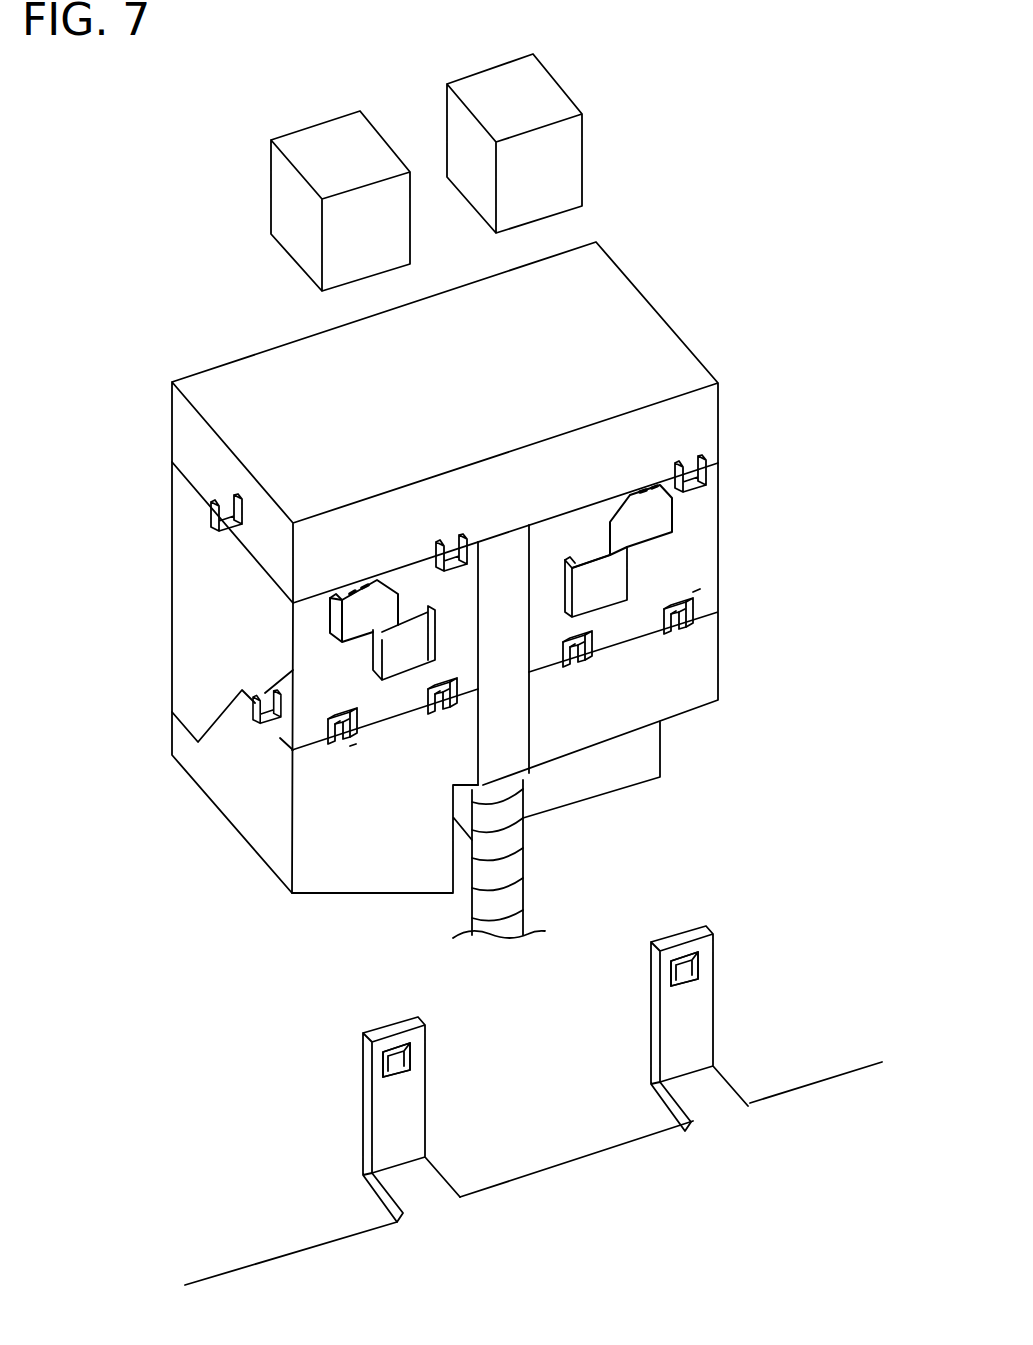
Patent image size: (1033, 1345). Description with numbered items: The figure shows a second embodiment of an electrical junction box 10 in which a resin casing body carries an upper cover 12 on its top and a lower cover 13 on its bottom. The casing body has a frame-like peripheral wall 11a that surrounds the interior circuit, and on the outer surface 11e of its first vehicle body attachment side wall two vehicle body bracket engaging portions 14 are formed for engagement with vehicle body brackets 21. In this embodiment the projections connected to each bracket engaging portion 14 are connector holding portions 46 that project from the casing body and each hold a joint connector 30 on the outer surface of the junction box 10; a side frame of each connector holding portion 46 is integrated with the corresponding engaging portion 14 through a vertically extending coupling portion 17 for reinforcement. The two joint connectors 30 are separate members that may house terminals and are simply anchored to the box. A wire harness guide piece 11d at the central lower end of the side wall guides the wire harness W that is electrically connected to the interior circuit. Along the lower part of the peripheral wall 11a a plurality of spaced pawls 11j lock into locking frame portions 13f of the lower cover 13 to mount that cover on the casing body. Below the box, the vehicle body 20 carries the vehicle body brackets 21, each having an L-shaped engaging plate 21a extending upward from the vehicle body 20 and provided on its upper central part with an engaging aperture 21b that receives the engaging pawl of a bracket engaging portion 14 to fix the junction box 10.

The electrical junction box 10 is at (473, 601).
The upper cover 12 is at (620, 321).
The lower cover 13 is at (705, 677).
The vehicle body bracket engaging portion 14 is at (650, 517).
The coupling portion 17 is at (607, 553).
The connector holding portion 46 is at (605, 580).
The peripheral wall 11a is at (693, 545).
The outer surface 11e is at (705, 587).
The wire harness guide piece 11d is at (510, 740).
The pawl 11j is at (345, 737).
The locking frame portion 13f is at (328, 737).
The wire harness W is at (510, 870).
The joint connector 30 is at (290, 198).
The vehicle body 20 is at (541, 1105).
The vehicle body bracket 21 is at (597, 1074).
The engaging plate 21a is at (405, 1103).
The engaging aperture 21b is at (392, 1058).